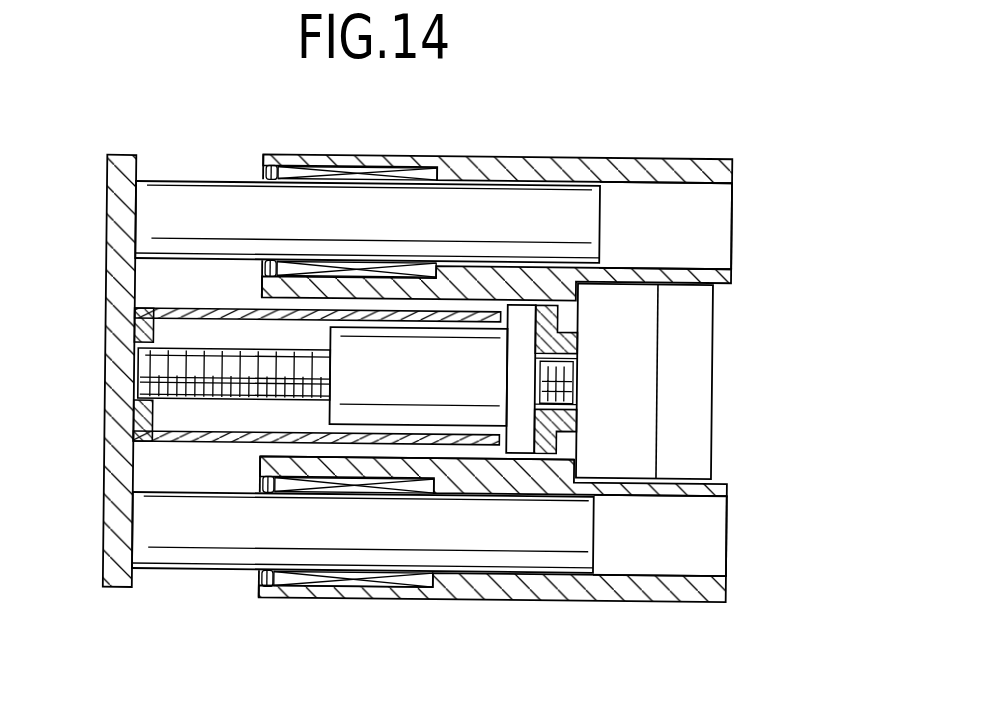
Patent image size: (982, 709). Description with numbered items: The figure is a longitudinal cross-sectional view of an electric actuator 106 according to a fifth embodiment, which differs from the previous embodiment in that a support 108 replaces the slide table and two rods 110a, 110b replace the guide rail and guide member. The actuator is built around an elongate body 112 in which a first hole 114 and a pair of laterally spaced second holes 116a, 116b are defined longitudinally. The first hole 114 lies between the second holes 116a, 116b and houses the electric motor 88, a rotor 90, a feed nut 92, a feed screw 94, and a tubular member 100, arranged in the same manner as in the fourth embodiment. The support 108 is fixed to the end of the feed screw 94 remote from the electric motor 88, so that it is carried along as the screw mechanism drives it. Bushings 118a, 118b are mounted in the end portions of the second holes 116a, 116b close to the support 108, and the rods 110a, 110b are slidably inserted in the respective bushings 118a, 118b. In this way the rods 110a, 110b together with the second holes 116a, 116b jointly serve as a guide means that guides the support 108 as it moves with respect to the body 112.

The electric motor 88 is at (695, 388).
The rotor 90 is at (563, 343).
The feed nut 92 is at (419, 376).
The feed screw 94 is at (200, 360).
The tubular member 100 is at (147, 322).
The electric actuator 106 is at (677, 97).
The support 108 is at (108, 392).
The rod 110a is at (193, 543).
The rod 110b is at (214, 195).
The elongate body 112 is at (565, 588).
The first hole 114 is at (466, 458).
The second hole 116a is at (650, 568).
The second hole 116b is at (646, 185).
The bushing 118a is at (343, 580).
The bushing 118b is at (376, 156).